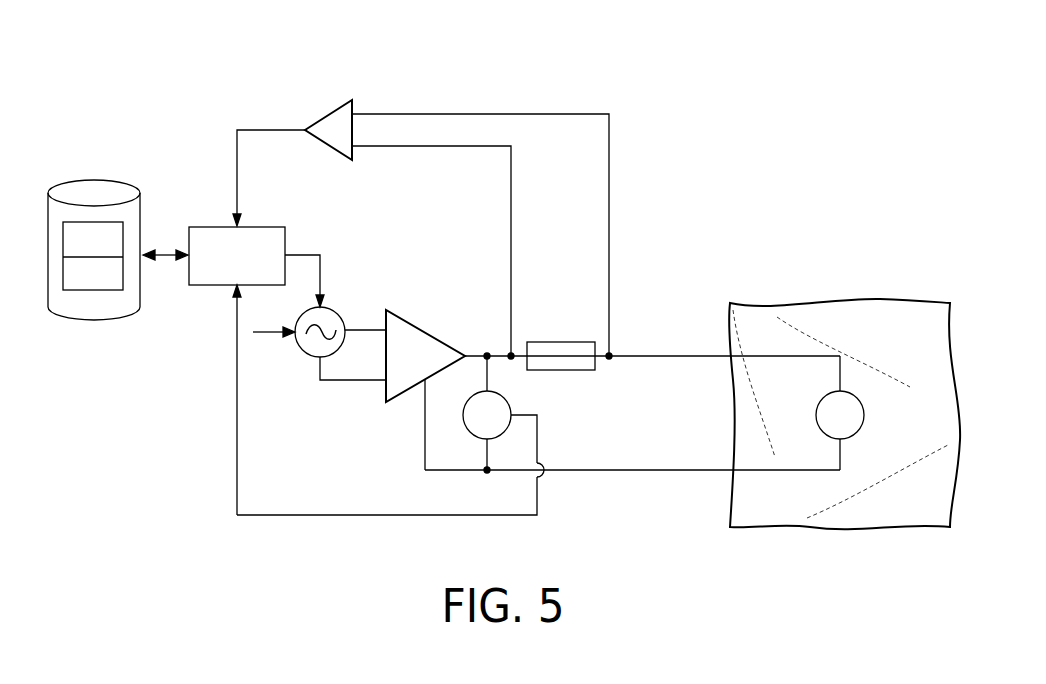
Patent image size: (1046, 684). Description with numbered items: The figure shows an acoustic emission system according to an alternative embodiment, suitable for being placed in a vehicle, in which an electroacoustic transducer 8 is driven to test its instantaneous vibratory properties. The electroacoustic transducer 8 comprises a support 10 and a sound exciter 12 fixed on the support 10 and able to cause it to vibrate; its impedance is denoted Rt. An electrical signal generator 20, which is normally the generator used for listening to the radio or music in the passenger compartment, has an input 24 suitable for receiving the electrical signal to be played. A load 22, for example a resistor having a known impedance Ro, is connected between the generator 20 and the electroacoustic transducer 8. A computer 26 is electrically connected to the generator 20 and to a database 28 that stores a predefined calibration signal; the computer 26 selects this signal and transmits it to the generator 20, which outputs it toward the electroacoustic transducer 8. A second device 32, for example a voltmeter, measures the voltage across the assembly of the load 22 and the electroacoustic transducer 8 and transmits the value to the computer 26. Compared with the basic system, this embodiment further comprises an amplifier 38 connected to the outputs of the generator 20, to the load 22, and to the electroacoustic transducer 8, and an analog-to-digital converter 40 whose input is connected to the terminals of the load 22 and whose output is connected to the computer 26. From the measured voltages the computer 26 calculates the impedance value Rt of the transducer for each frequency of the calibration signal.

The electroacoustic transducer 8 is at (808, 557).
The support 10 is at (882, 507).
The sound exciter 12 is at (843, 408).
The electrical signal generator 20 is at (337, 308).
The load 22 is at (560, 350).
The input 24 is at (274, 347).
The computer 26 is at (237, 256).
The database 28 is at (75, 317).
The second device for measuring voltage 32 is at (462, 423).
The amplifier 38 is at (423, 345).
The analog-to-digital converter 40 is at (335, 125).
The known impedance of the load Ro is at (573, 358).
The impedance value of the electroacoustic transducer Rt is at (815, 320).